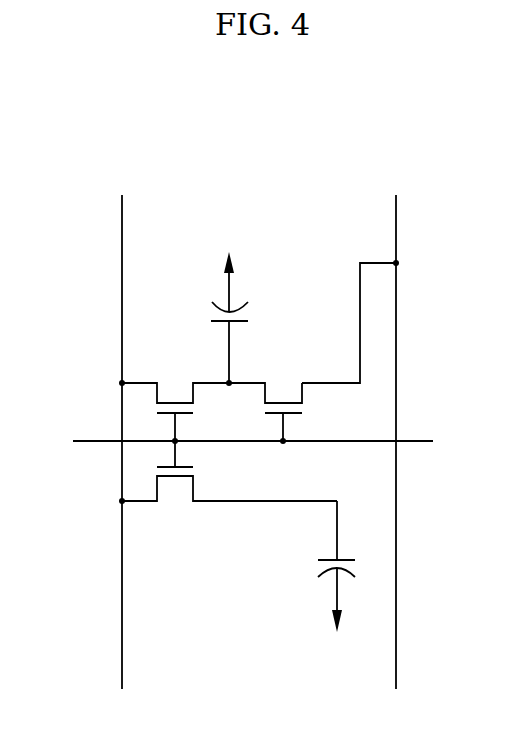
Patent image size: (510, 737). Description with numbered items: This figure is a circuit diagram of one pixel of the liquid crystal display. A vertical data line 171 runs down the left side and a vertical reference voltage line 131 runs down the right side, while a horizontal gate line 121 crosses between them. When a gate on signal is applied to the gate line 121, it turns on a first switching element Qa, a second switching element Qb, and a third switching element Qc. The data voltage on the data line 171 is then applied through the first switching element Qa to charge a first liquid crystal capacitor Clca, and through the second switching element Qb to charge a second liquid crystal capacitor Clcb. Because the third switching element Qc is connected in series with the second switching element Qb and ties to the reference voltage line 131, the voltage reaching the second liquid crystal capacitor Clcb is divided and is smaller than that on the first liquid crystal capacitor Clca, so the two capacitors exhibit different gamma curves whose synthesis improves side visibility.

The data line 171 is at (123, 428).
The reference voltage line 131 is at (395, 428).
The gate line 121 is at (236, 443).
The first switching element Qa is at (228, 484).
The second switching element Qb is at (174, 401).
The third switching element Qc is at (264, 401).
The first liquid crystal capacitor Clca is at (315, 566).
The second liquid crystal capacitor Clcb is at (253, 317).